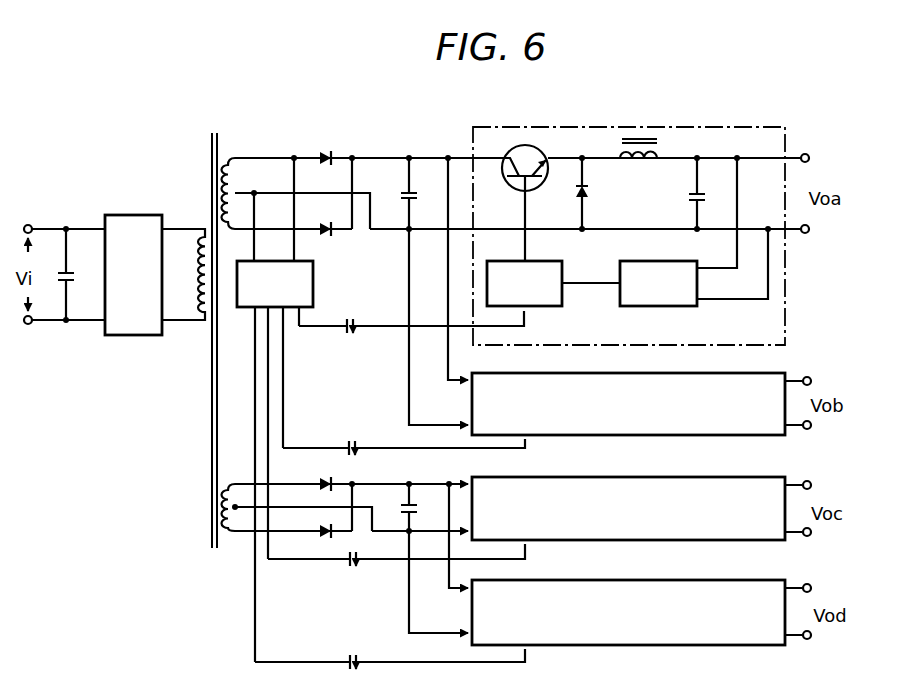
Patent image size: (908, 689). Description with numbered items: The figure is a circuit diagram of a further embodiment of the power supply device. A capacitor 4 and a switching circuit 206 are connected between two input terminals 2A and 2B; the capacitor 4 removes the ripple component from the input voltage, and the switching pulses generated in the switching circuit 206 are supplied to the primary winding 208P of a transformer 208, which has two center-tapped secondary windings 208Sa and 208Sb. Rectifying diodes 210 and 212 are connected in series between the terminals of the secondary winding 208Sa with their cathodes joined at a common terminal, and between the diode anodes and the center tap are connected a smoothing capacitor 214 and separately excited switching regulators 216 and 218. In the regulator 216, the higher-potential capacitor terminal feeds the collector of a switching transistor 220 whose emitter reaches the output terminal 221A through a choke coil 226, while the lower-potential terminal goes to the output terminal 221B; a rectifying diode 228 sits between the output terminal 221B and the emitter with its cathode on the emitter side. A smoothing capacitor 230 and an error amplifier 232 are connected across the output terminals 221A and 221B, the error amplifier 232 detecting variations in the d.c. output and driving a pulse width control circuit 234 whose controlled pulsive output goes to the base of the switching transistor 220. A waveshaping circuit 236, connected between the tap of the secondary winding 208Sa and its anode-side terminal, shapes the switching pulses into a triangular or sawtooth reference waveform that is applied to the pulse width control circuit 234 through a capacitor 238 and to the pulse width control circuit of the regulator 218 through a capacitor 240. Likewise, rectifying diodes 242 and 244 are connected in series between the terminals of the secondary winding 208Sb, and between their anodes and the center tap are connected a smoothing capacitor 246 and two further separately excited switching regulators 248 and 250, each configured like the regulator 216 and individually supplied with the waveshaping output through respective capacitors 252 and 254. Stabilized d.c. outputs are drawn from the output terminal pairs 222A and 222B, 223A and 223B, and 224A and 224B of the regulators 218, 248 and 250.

The input terminal 2A is at (60, 218).
The input terminal 2B is at (61, 333).
The capacitor 4 is at (75, 274).
The switching circuit 206 is at (120, 318).
The transformer 208 is at (212, 462).
The primary winding 208P is at (185, 228).
The secondary winding 208Sa is at (247, 155).
The secondary winding 208Sb is at (232, 537).
The rectifying diode 210 is at (327, 152).
The rectifying diode 212 is at (330, 233).
The smoothing capacitor 214 is at (400, 195).
The separately excited switching regulator 216 is at (787, 318).
The switching regulator 218 is at (488, 413).
The switching transistor 220 is at (519, 146).
The output terminal 221A is at (806, 153).
The output terminal 221B is at (807, 233).
The output terminal 222A is at (809, 377).
The output terminal 222B is at (809, 429).
The output terminal 223A is at (811, 485).
The output terminal 223B is at (811, 534).
The output terminal 224A is at (811, 587).
The output terminal 224B is at (811, 637).
The choke coil 226 is at (642, 138).
The rectifying diode 228 is at (602, 193).
The smoothing capacitor 230 is at (682, 193).
The error amplifier 232 is at (598, 258).
The pulse width control circuit 234 is at (540, 292).
The waveshaping circuit 236 is at (296, 293).
The capacitor 238 is at (411, 314).
The capacitor 240 is at (404, 438).
The rectifying diode 242 is at (327, 477).
The rectifying diode 244 is at (325, 538).
The smoothing capacitor 246 is at (400, 503).
The switching regulator 248 is at (488, 516).
The switching regulator 250 is at (488, 620).
The capacitor 252 is at (396, 567).
The capacitor 254 is at (390, 650).